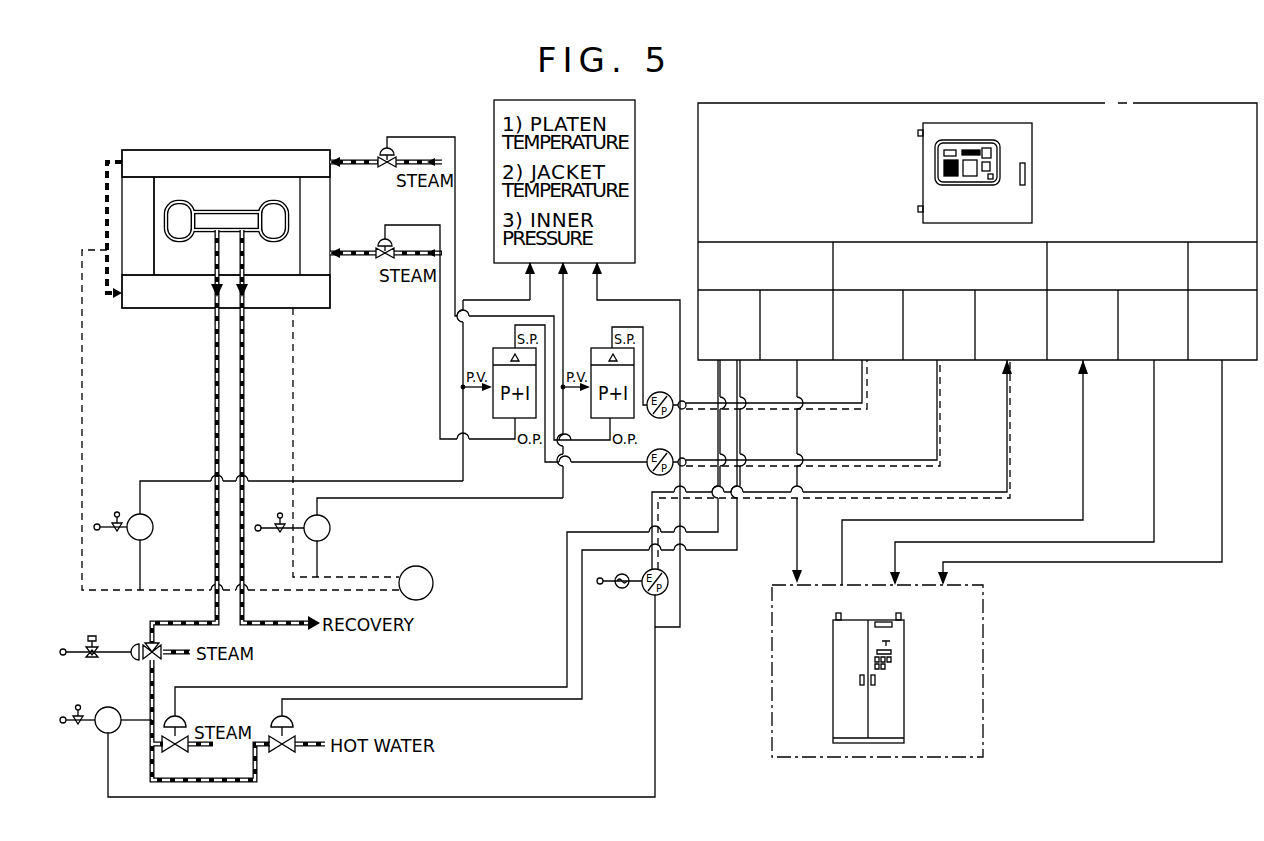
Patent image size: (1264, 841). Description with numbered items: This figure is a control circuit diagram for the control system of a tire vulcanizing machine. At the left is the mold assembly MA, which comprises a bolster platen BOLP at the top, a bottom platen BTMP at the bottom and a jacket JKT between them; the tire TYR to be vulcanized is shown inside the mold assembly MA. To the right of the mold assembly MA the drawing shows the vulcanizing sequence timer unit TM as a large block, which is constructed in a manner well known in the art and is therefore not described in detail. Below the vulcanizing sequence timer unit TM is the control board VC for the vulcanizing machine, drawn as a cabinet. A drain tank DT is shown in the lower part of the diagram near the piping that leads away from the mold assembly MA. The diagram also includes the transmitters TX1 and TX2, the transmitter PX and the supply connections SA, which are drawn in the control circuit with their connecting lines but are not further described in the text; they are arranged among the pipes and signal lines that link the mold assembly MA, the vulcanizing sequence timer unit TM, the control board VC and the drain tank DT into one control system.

The mold assembly MA is at (281, 141).
The bolster platen BOLP is at (317, 162).
The bottom platen BTMP is at (315, 302).
The jacket JKT is at (137, 277).
The tire TYR is at (184, 208).
The vulcanizing sequence timer unit TM is at (1105, 103).
The control board VC is at (983, 653).
The drain tank DT is at (433, 573).
The temperature transmitter 1 TX1 is at (295, 532).
The temperature transmitter 2 TX2 is at (433, 537).
The pressure transmitter PX is at (387, 529).
The air supply SA is at (347, 627).